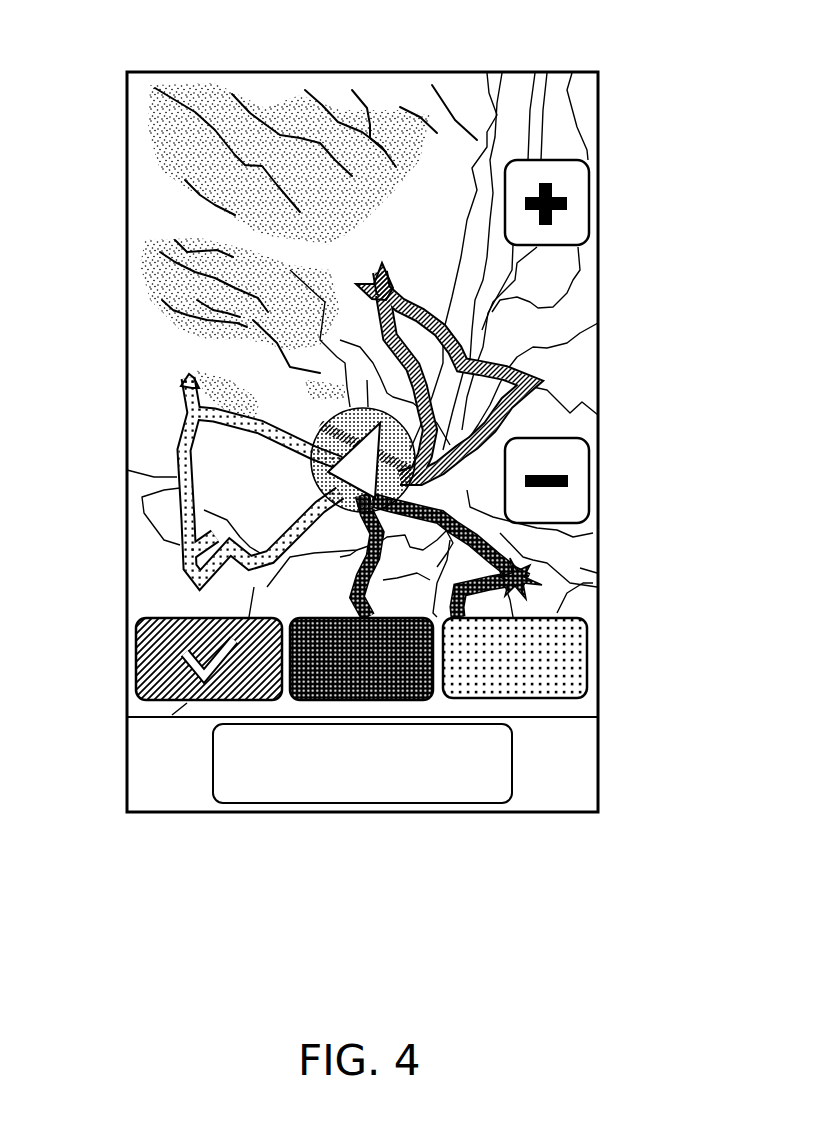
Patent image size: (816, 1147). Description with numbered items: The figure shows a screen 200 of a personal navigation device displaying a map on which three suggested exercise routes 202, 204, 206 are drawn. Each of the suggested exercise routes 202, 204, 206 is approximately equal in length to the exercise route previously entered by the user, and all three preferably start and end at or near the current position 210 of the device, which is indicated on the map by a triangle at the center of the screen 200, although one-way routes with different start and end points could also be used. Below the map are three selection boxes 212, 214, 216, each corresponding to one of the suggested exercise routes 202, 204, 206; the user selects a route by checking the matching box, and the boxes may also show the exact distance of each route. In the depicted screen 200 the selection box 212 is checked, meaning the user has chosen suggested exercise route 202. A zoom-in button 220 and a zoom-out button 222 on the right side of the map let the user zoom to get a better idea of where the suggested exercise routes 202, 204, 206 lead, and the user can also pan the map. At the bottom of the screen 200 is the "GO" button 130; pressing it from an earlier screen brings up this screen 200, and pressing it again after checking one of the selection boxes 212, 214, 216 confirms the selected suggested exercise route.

The screen 200 is at (462, 72).
The suggested exercise route 202 is at (467, 447).
The suggested exercise route 204 is at (592, 577).
The suggested exercise route 206 is at (182, 450).
The current position 210 is at (335, 420).
The selection box 212 is at (152, 659).
The selection box 214 is at (327, 619).
The selection box 216 is at (572, 665).
The zoom-in button 220 is at (578, 202).
The zoom-out button 222 is at (578, 480).
The "GO" button 130 is at (227, 778).